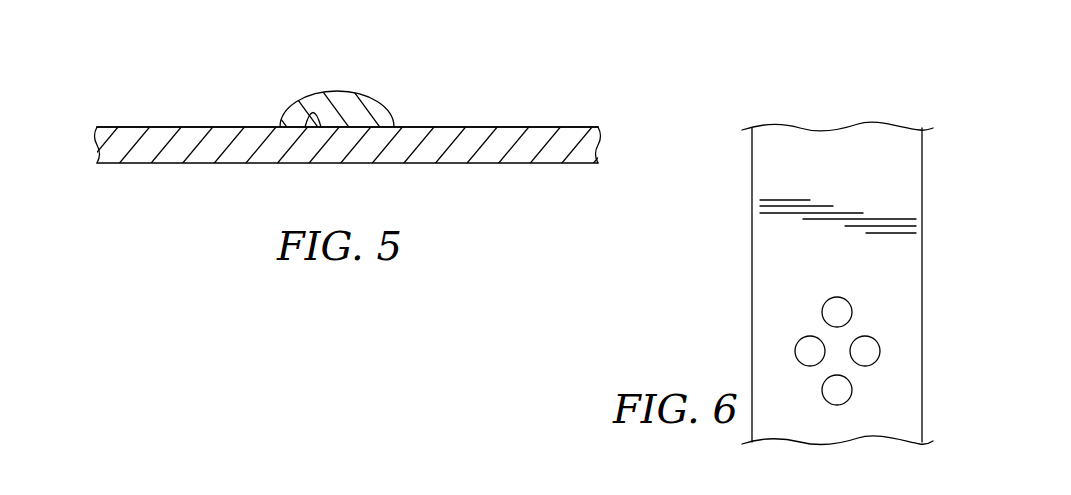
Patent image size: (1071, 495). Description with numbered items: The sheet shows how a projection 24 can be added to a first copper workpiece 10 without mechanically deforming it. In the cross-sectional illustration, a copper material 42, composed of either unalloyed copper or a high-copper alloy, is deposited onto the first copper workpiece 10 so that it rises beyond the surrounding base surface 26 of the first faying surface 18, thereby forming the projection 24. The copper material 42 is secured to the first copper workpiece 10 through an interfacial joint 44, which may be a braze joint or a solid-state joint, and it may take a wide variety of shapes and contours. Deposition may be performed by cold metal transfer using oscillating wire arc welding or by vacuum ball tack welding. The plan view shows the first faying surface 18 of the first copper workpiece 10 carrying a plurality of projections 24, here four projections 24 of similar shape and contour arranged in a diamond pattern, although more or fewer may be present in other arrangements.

In FIG. 5, the first copper workpiece 10 is at (112, 119).
In FIG. 6, the first copper workpiece 10 is at (744, 144).
In FIG. 5, the first faying surface 18 is at (516, 127).
In FIG. 6, the first faying surface 18 is at (887, 184).
In FIG. 5, the projection 24 is at (302, 108).
In FIG. 6, the projection 24 is at (850, 299).
In FIG. 5, the base surface 26 is at (235, 127).
In FIG. 5, the copper material 42 is at (352, 108).
In FIG. 5, the interfacial joint 44 is at (313, 114).